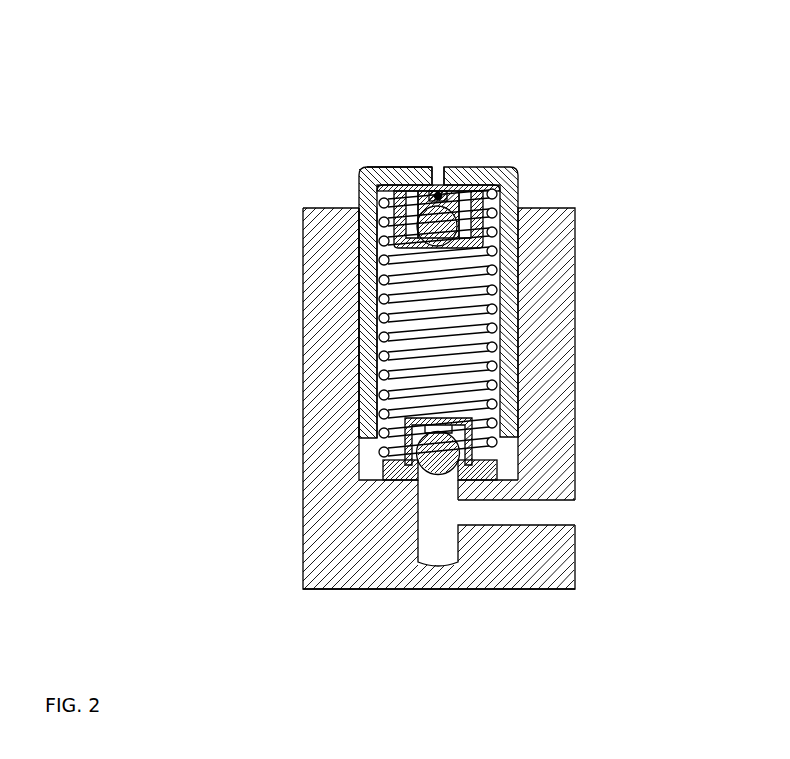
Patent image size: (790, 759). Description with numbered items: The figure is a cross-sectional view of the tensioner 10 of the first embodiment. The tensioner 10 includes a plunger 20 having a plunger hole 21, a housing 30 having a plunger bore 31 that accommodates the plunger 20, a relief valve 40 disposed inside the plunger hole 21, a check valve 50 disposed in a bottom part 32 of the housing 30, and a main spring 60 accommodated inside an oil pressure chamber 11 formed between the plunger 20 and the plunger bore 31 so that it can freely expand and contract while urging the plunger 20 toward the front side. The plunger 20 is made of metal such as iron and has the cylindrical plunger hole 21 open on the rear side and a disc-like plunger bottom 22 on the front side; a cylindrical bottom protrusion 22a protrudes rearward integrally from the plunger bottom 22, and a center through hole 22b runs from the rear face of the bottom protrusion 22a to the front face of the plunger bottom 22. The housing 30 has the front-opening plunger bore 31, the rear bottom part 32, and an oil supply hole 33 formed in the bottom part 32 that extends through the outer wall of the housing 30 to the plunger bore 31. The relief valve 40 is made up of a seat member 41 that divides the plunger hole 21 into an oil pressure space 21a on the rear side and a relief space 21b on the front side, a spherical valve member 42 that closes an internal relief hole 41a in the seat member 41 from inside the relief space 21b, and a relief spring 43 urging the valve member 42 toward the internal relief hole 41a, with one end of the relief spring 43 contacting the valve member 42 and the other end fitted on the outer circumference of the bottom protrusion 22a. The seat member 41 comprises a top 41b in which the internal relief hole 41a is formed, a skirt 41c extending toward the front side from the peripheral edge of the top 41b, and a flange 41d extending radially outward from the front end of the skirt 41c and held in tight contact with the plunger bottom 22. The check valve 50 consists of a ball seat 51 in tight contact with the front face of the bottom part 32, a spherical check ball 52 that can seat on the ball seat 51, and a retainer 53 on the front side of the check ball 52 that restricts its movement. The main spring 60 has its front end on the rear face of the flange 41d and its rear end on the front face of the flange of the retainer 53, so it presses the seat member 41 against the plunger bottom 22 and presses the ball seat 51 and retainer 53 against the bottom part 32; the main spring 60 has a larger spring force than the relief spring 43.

The tensioner 10 is at (240, 85).
The oil pressure chamber 11 is at (362, 412).
The plunger 20 is at (520, 181).
The plunger hole 21 is at (690, 218).
The oil pressure space 21a is at (519, 263).
The relief space 21b is at (519, 228).
The plunger bottom 22 is at (458, 175).
The bottom protrusion 22a is at (427, 165).
The center through hole 22b is at (437, 172).
The housing 30 is at (302, 424).
The plunger bore 31 is at (362, 462).
The bottom part 32 is at (388, 520).
The oil supply hole 33 is at (438, 525).
The relief valve 40 is at (482, 170).
The seat member 41 is at (200, 177).
The internal relief hole 41a is at (360, 310).
The top 41b is at (400, 250).
The skirt 41c is at (398, 225).
The flange 41d is at (395, 190).
The valve member 42 is at (370, 278).
The relief spring 43 is at (360, 172).
The check valve 50 is at (676, 407).
The ball seat 51 is at (470, 468).
The check ball 52 is at (462, 450).
The retainer 53 is at (475, 421).
The main spring 60 is at (497, 343).